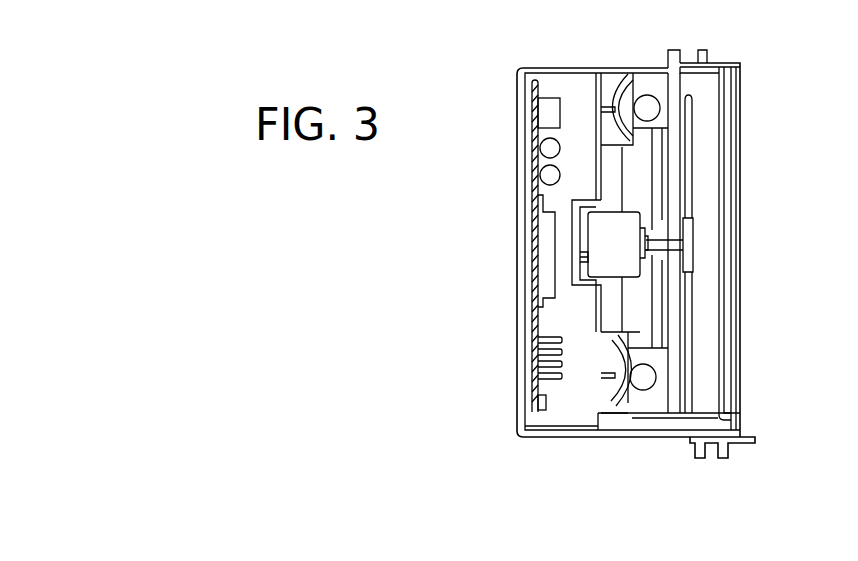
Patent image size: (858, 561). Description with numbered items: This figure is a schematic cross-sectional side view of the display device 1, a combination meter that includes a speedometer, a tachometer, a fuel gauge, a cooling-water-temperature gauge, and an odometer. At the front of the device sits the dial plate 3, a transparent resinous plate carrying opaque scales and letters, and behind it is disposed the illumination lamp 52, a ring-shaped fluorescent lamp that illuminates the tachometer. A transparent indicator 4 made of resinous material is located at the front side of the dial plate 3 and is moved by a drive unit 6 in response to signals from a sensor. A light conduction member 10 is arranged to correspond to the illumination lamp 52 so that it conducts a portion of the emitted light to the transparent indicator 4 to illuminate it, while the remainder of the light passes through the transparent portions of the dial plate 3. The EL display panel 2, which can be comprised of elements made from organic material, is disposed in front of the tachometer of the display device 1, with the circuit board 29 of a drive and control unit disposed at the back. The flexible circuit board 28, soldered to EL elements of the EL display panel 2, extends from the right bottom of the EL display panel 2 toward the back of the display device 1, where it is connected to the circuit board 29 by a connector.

The display device 1 is at (507, 53).
The EL display panel 2 is at (740, 246).
The dial plate 3 is at (680, 72).
The indicator 4 is at (690, 193).
The drive unit 6 is at (595, 264).
The light conduction member 10 is at (657, 170).
The flexible circuit board 28 is at (538, 432).
The circuit board 29 is at (533, 130).
The illumination lamp 52 is at (615, 105).